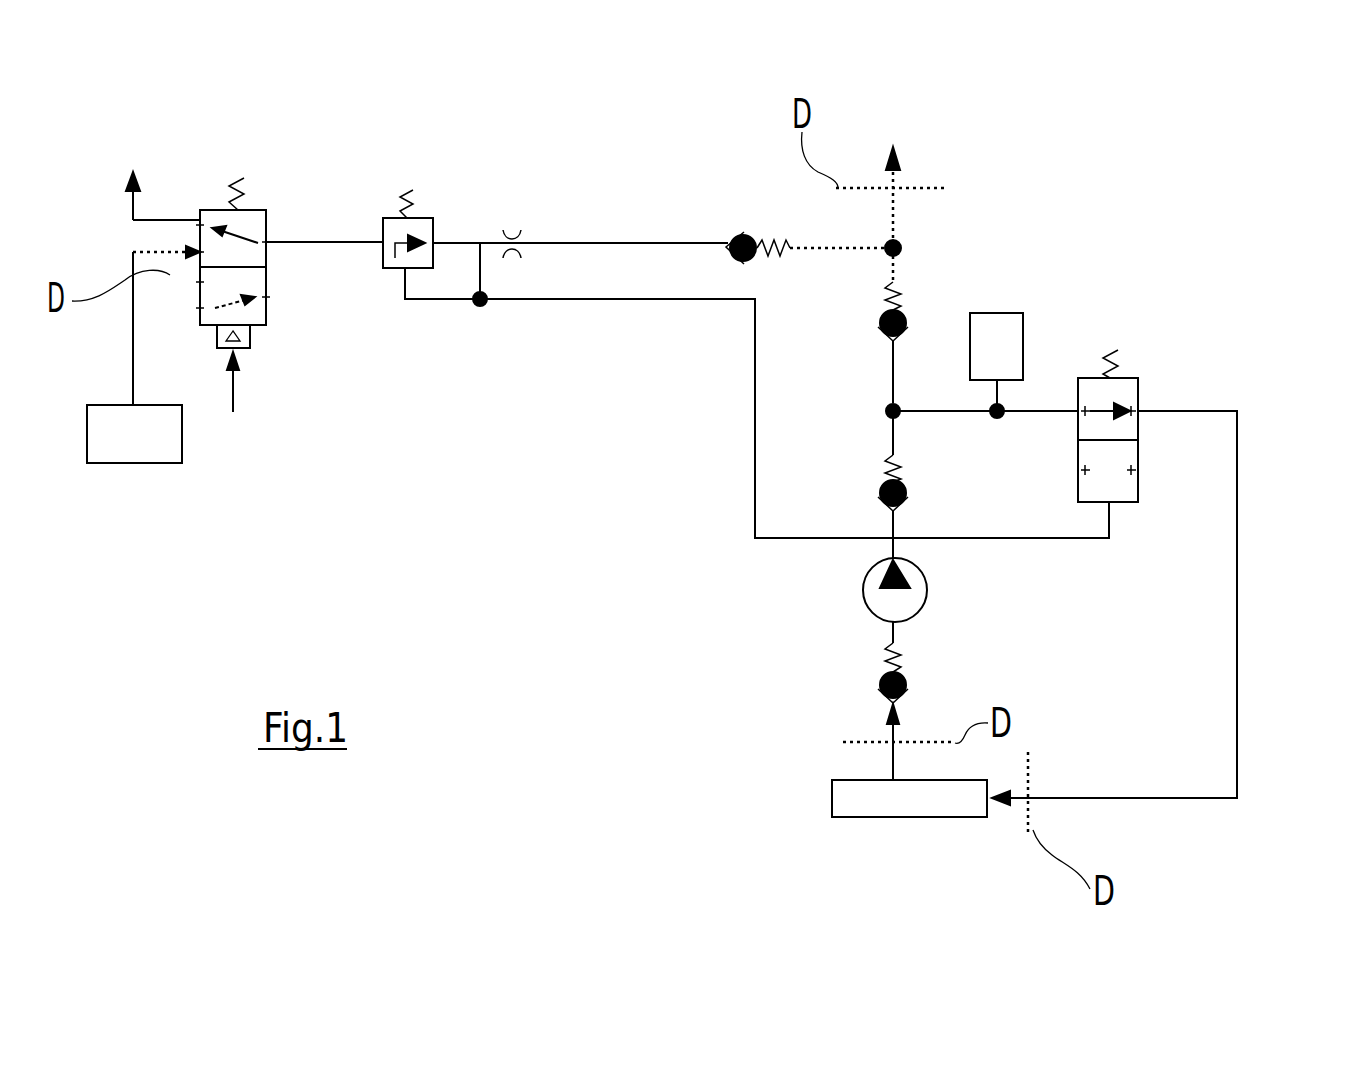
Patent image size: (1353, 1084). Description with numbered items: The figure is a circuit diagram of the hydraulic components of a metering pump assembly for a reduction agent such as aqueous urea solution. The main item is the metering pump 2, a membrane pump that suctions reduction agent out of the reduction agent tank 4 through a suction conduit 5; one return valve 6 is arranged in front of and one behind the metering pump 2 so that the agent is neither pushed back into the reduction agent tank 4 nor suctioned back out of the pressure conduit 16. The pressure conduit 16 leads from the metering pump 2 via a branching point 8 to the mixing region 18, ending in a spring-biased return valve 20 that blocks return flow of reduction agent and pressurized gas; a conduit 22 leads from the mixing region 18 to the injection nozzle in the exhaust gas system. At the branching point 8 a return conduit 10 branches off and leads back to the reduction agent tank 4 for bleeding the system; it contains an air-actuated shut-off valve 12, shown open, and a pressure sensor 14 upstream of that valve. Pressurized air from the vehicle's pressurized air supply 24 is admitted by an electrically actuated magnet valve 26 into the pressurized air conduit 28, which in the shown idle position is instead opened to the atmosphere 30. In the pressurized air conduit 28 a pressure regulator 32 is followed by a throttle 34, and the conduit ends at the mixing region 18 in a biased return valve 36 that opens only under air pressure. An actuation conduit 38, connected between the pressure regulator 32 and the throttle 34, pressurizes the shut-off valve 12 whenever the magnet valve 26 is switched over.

The metering pump 2 is at (920, 593).
The reduction agent tank 4 is at (962, 810).
The suction conduit 5 is at (895, 778).
The return valve 6 is at (910, 492).
The branching point 8 is at (893, 413).
The return conduit 10 is at (1239, 570).
The shut-off valve 12 is at (1140, 378).
The pressure sensor 14 is at (1018, 347).
The pressure conduit 16 is at (893, 371).
The mixing region 18 is at (920, 248).
The return valve 20 is at (915, 318).
The conduit 22 is at (898, 211).
The pressurized air supply 24 is at (172, 456).
The magnet valve 26 is at (252, 212).
The pressurized air conduit 28 is at (598, 242).
The atmosphere 30 is at (157, 169).
The pressure regulator 32 is at (410, 190).
The throttle 34 is at (514, 228).
The return valve 36 is at (740, 231).
The actuation conduit 38 is at (756, 484).